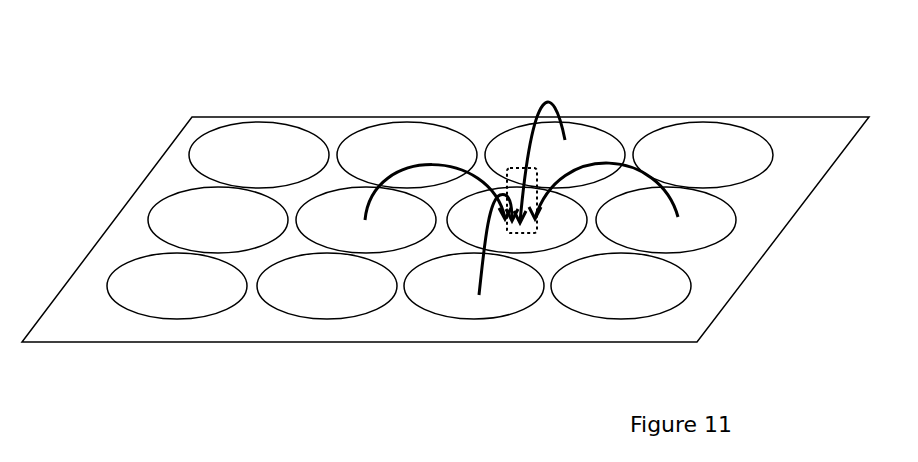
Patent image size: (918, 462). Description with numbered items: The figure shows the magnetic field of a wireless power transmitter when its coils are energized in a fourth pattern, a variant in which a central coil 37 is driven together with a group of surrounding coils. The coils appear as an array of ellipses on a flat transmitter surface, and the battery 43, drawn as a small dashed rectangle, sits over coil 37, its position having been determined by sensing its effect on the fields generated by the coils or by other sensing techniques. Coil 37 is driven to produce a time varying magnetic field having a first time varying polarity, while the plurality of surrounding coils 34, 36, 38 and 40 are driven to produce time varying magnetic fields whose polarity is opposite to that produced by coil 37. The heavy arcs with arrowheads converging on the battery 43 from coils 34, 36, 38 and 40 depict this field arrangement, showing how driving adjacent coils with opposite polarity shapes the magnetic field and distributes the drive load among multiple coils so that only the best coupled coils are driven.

The coil 34 is at (403, 209).
The coil 36 is at (555, 162).
The coil 37 is at (517, 220).
The coil 38 is at (474, 257).
The coil 40 is at (632, 208).
The battery 43 is at (510, 173).